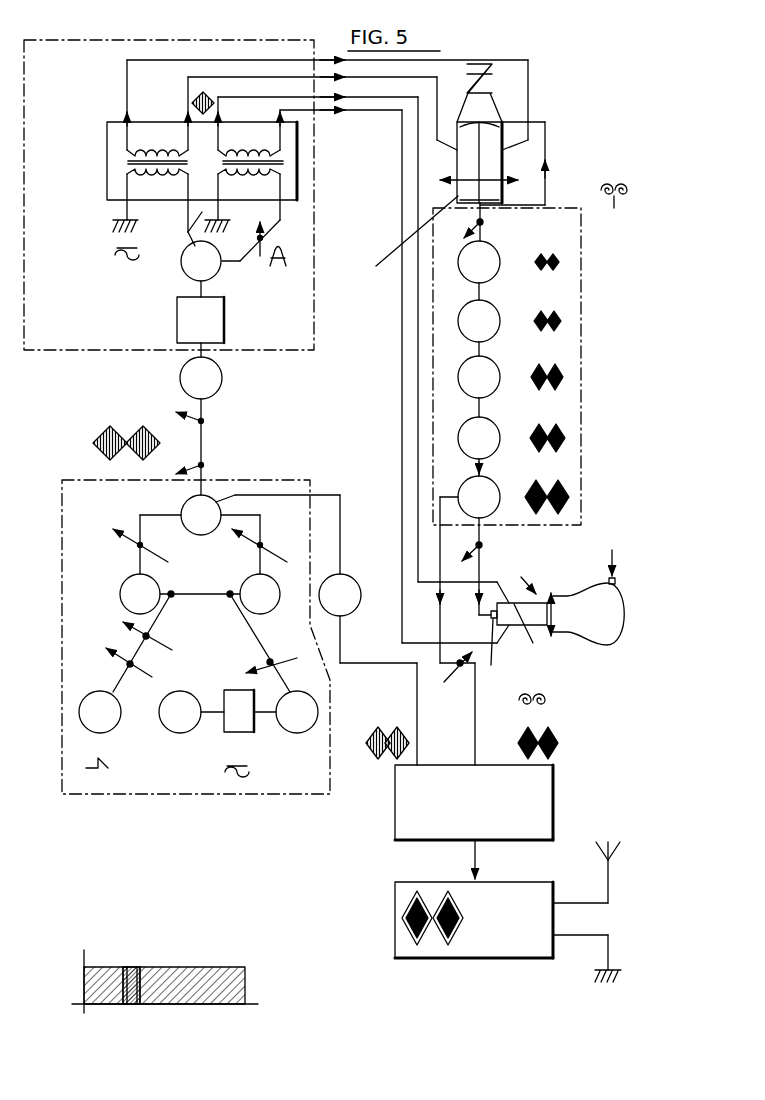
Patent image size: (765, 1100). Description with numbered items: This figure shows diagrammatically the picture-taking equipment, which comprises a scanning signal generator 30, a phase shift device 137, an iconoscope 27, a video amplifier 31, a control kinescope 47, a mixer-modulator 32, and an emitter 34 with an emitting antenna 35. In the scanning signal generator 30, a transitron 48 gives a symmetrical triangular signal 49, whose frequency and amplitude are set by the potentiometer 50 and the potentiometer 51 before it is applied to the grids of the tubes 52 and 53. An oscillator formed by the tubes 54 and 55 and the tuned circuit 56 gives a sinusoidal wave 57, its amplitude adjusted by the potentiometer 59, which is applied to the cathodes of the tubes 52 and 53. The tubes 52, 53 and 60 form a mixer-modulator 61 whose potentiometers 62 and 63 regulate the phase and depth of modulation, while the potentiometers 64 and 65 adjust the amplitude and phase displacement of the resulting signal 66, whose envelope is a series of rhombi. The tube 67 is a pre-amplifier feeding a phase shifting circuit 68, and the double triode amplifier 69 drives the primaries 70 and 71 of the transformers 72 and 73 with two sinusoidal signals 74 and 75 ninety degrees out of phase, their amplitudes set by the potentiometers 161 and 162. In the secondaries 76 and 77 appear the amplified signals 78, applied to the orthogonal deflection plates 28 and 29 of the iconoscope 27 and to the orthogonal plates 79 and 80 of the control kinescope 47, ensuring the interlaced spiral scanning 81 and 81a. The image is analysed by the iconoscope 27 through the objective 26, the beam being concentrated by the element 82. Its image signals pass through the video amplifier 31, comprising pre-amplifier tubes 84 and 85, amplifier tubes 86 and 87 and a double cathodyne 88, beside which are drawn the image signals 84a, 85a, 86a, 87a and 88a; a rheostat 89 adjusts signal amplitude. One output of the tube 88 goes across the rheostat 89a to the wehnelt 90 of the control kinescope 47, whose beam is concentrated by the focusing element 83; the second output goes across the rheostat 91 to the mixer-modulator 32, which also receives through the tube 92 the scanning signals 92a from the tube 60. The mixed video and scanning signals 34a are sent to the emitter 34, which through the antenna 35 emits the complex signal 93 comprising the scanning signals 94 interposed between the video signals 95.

The objective 26 is at (488, 94).
The iconoscope 27 is at (442, 163).
The orthogonal deflection plate 28 is at (514, 164).
The orthogonal deflection plate 29 is at (445, 167).
The scanning signal generator 30 is at (75, 650).
The video amplifier 31 is at (572, 405).
The mixer-modulator 32 is at (527, 797).
The emitter 34 is at (499, 935).
The mixed video and scanning signals 34a is at (412, 937).
The emitting antenna 35 is at (602, 920).
The control kinescope 47 is at (618, 582).
The transitron 48 is at (107, 722).
The triangular signal 49 is at (92, 770).
The potentiometer 50 is at (130, 664).
The potentiometer 51 is at (146, 636).
The tube 52 is at (133, 592).
The tube 53 is at (263, 597).
The tube 54 is at (305, 715).
The tube 55 is at (183, 722).
The tuned circuit 56 is at (245, 720).
The sinusoidal wave 57 is at (238, 776).
The potentiometer 59 is at (270, 662).
The tube 60 is at (195, 508).
The mixer-modulator 61 is at (203, 562).
The potentiometer 62 is at (260, 545).
The potentiometer 63 is at (140, 545).
The potentiometer 64 is at (222, 456).
The potentiometer 65 is at (222, 428).
The scanning signal 66 is at (115, 427).
The pre-amplifier tube 67 is at (205, 378).
The phase shifting circuit 68 is at (205, 325).
The double triode amplifier 69 is at (190, 258).
The primary 70 is at (150, 172).
The primary 71 is at (262, 172).
The transformer 72 is at (118, 160).
The transformer 73 is at (290, 160).
The sinusoidal signal 74 is at (124, 260).
The sinusoidal signal 75 is at (277, 268).
The secondary 76 is at (148, 150).
The secondary 77 is at (262, 150).
The amplified signals 78 is at (207, 98).
The orthogonal plate 79 is at (530, 643).
The orthogonal plate 80 is at (521, 575).
The interlaced spiral scanning 81 is at (614, 207).
The interlaced spiral scanning 81a is at (548, 700).
The focusing element 82 is at (402, 238).
The focusing element 83 is at (552, 614).
The pre-amplifier tube 84 is at (468, 262).
The image signal 84a is at (560, 259).
The pre-amplifier tube 85 is at (468, 321).
The image signal 85a is at (562, 319).
The amplifier tube 86 is at (468, 377).
The image signal 86a is at (564, 376).
The amplifier tube 87 is at (468, 438).
The image signal 87a is at (566, 437).
The double cathodyne 88 is at (465, 490).
The video signals 88a is at (570, 498).
The rheostat 89 is at (487, 224).
The rheostat 89a is at (475, 544).
The wehnelt 90 is at (490, 655).
The rheostat 91 is at (460, 665).
The tube 92 is at (343, 580).
The scanning signals 92a is at (372, 758).
The complex signal 93 is at (178, 962).
The scanning signals 94 is at (129, 1005).
The video signals 95 is at (119, 967).
The phase shift device 137 is at (57, 306).
The potentiometer 161 is at (200, 212).
The potentiometer 162 is at (282, 228).